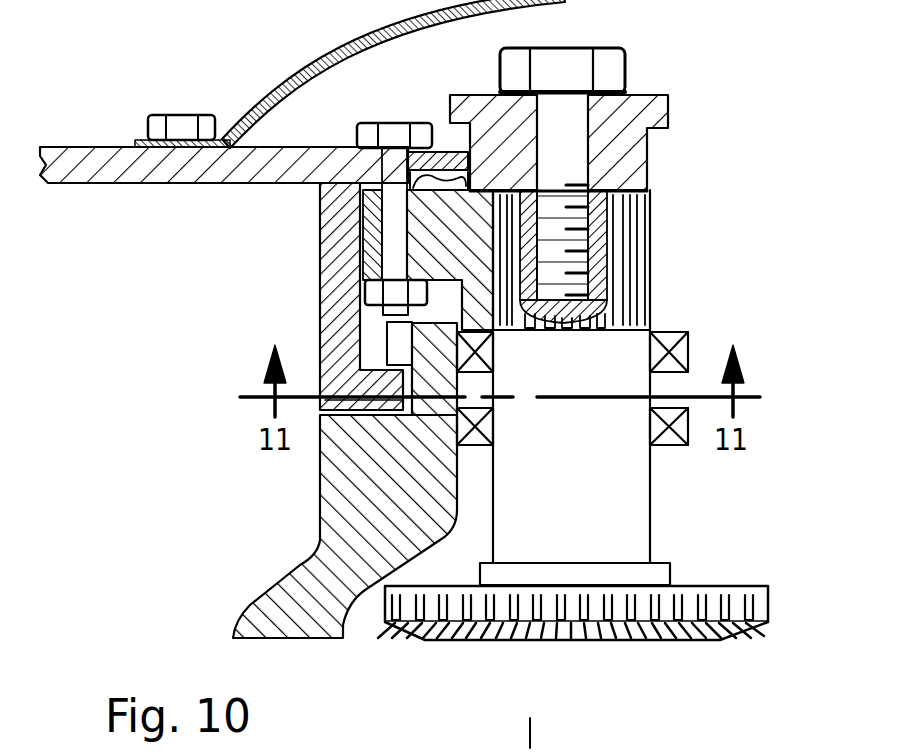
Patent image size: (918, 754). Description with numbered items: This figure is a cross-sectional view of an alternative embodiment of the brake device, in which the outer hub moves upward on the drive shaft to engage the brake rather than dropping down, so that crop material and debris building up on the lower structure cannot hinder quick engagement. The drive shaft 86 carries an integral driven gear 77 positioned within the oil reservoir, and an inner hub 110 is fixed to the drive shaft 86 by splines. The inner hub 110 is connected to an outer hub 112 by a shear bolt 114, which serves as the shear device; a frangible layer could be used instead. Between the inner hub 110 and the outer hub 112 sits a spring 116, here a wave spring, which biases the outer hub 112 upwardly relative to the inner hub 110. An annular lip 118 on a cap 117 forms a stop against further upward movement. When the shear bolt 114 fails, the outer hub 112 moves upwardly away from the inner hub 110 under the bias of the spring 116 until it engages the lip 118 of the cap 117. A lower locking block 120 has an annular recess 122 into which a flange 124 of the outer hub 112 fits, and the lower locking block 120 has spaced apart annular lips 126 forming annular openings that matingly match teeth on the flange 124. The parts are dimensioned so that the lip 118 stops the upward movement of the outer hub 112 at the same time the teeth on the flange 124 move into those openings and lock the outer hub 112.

The driven gear 77 is at (733, 640).
The drive shaft 86 is at (588, 479).
The inner hub 110 is at (440, 243).
The outer hub 112 is at (330, 228).
The shear bolt 114 is at (367, 136).
The spring 116 is at (443, 172).
The cap 117 is at (625, 150).
The annular lip 118 is at (452, 123).
The lower locking block 120 is at (350, 465).
The annular recess 122 is at (425, 412).
The flange 124 is at (378, 388).
The annular lips 126 is at (395, 337).